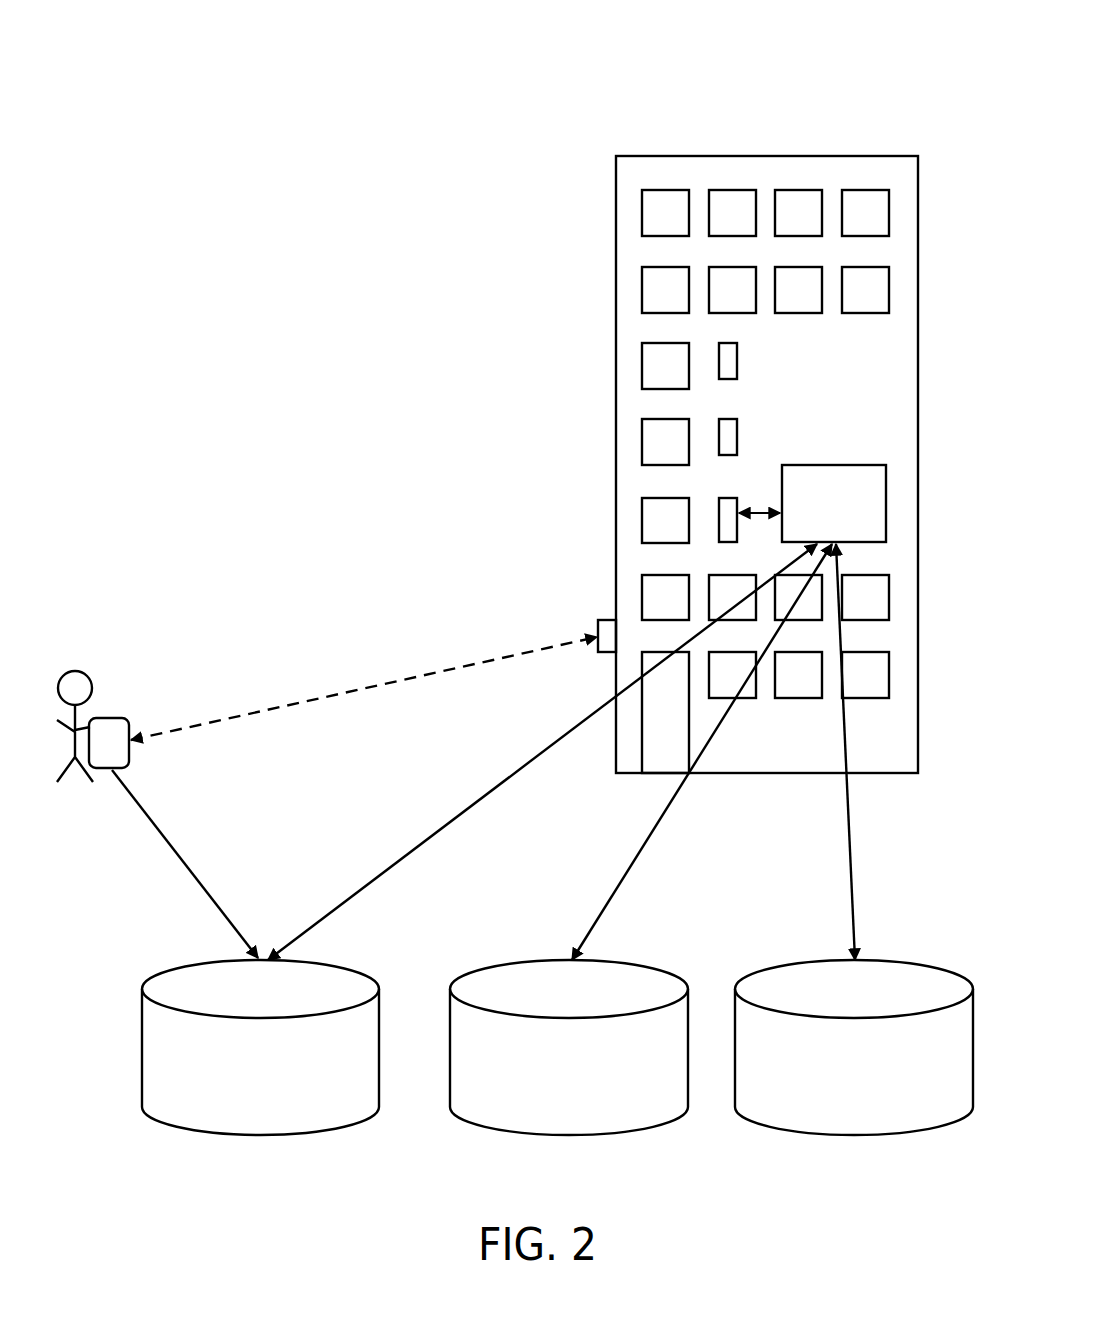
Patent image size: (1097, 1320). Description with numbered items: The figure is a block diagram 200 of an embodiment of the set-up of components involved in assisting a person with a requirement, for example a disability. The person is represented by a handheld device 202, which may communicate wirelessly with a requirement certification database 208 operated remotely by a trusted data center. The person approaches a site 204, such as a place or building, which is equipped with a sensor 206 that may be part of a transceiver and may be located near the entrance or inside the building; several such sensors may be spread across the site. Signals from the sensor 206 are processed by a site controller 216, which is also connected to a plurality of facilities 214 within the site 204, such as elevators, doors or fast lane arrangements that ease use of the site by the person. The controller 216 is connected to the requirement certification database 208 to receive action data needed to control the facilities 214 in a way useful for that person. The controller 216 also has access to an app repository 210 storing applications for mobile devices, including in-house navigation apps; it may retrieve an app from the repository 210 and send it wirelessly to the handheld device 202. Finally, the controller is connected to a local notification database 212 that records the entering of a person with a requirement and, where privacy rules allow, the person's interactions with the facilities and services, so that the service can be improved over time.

The block diagram 200 is at (180, 90).
The handheld device 202 is at (117, 697).
The site 204 is at (515, 352).
The sensor 206 is at (593, 608).
The requirement certification database 208 is at (260, 1047).
The app repository 210 is at (569, 1047).
The local notification database 212 is at (854, 1047).
The facilities 214 is at (729, 495).
The site controller 216 is at (834, 503).